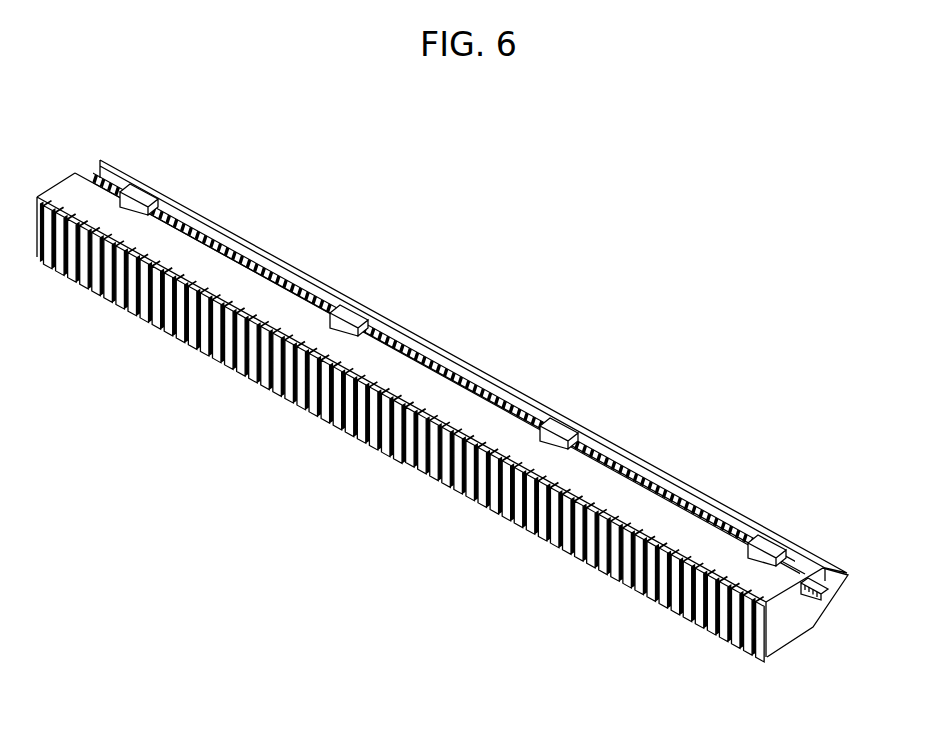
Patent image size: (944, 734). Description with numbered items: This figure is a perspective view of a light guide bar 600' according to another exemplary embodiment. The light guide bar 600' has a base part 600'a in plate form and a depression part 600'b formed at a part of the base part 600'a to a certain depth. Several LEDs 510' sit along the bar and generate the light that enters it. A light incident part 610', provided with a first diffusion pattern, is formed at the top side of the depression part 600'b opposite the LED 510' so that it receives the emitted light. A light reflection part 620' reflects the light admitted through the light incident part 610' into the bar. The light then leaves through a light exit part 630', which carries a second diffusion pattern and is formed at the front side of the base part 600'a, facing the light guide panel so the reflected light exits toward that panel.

The LED 510' is at (473, 345).
The light guide bar 600' is at (401, 411).
The base part 600'a is at (440, 373).
The depression part 600'b is at (470, 370).
The light incident part 610' is at (838, 552).
The light reflection part 620' is at (841, 612).
The light exit part 630' is at (404, 443).